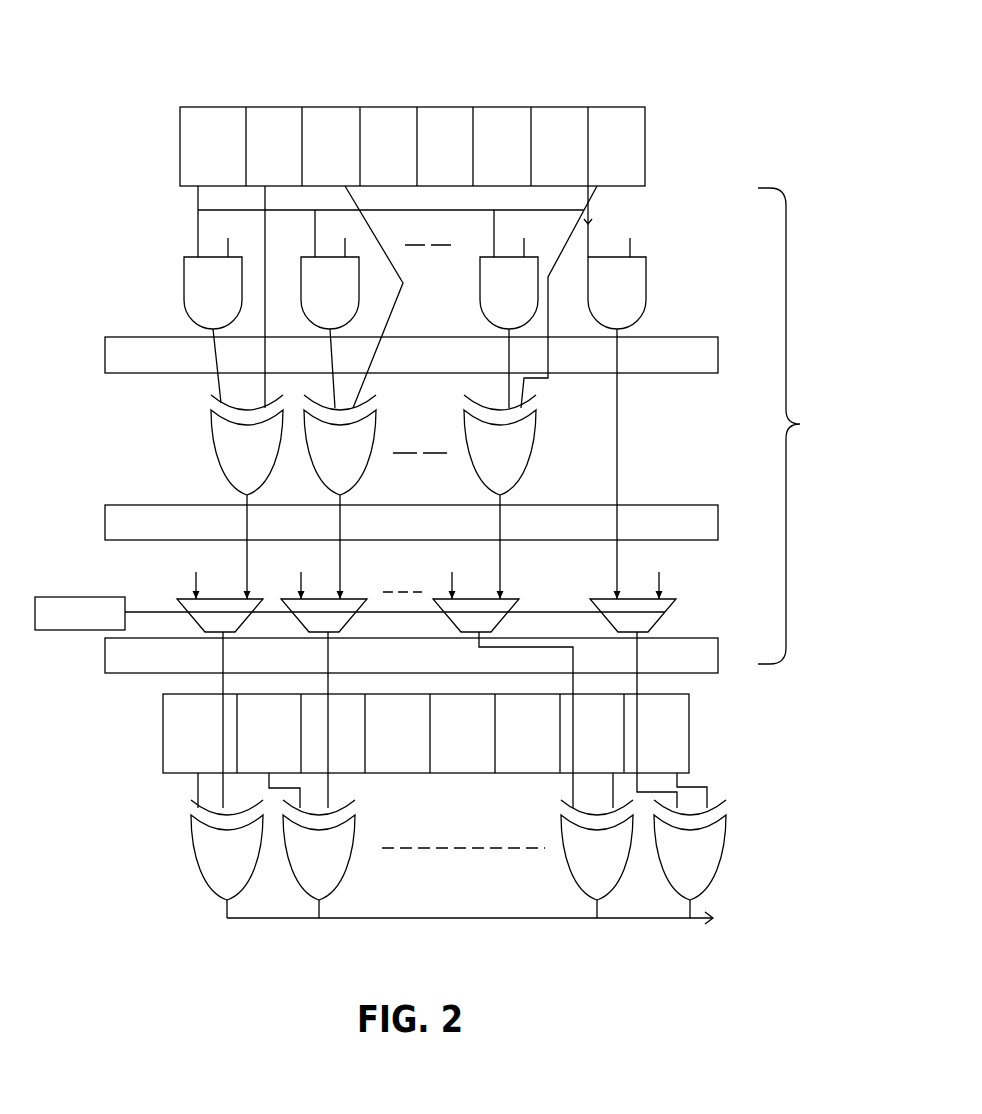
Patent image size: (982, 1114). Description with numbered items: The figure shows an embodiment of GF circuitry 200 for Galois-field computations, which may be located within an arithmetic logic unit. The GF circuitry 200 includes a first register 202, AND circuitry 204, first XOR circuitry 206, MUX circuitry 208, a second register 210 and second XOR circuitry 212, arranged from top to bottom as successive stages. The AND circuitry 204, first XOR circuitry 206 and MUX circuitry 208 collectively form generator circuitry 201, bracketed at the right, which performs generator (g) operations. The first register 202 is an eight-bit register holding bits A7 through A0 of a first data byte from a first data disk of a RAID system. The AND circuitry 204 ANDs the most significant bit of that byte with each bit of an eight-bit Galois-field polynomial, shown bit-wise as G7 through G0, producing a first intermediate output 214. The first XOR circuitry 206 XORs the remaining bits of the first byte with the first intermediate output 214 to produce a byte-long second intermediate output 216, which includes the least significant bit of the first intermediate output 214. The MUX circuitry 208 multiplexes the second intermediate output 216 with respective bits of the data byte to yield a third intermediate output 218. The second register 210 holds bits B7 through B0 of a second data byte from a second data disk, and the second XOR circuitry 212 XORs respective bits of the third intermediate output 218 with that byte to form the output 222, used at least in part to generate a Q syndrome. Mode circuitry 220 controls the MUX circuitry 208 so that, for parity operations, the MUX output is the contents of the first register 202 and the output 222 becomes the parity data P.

The GF circuitry 200 is at (121, 72).
The generator circuitry 201 is at (834, 449).
The first register 202 is at (180, 146).
The AND circuitry 204 is at (170, 293).
The first XOR circuitry 206 is at (203, 445).
The MUX circuitry 208 is at (677, 612).
The second register 210 is at (163, 733).
The second XOR circuitry 212 is at (180, 847).
The first intermediate output 214 is at (656, 337).
The second intermediate output 216 is at (623, 505).
The third intermediate output 218 is at (719, 652).
The mode circuitry 220 is at (103, 597).
The output 222 is at (455, 918).